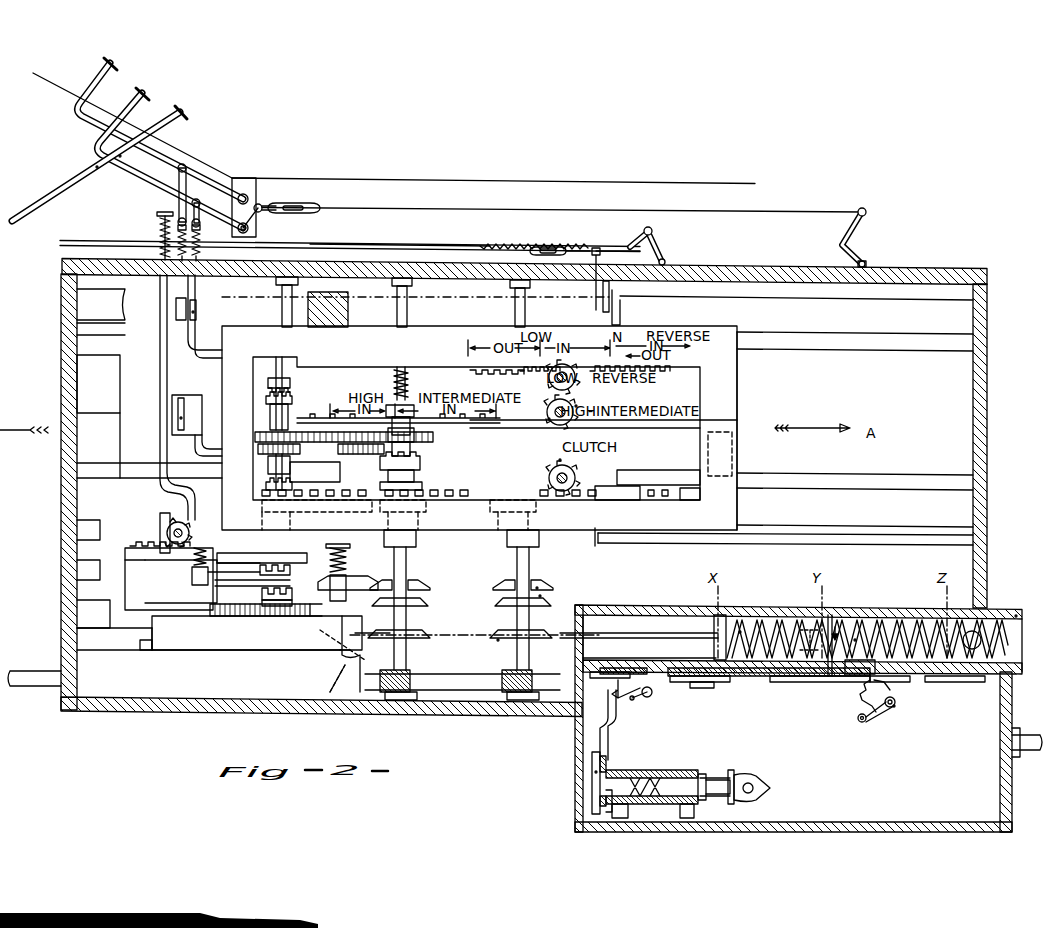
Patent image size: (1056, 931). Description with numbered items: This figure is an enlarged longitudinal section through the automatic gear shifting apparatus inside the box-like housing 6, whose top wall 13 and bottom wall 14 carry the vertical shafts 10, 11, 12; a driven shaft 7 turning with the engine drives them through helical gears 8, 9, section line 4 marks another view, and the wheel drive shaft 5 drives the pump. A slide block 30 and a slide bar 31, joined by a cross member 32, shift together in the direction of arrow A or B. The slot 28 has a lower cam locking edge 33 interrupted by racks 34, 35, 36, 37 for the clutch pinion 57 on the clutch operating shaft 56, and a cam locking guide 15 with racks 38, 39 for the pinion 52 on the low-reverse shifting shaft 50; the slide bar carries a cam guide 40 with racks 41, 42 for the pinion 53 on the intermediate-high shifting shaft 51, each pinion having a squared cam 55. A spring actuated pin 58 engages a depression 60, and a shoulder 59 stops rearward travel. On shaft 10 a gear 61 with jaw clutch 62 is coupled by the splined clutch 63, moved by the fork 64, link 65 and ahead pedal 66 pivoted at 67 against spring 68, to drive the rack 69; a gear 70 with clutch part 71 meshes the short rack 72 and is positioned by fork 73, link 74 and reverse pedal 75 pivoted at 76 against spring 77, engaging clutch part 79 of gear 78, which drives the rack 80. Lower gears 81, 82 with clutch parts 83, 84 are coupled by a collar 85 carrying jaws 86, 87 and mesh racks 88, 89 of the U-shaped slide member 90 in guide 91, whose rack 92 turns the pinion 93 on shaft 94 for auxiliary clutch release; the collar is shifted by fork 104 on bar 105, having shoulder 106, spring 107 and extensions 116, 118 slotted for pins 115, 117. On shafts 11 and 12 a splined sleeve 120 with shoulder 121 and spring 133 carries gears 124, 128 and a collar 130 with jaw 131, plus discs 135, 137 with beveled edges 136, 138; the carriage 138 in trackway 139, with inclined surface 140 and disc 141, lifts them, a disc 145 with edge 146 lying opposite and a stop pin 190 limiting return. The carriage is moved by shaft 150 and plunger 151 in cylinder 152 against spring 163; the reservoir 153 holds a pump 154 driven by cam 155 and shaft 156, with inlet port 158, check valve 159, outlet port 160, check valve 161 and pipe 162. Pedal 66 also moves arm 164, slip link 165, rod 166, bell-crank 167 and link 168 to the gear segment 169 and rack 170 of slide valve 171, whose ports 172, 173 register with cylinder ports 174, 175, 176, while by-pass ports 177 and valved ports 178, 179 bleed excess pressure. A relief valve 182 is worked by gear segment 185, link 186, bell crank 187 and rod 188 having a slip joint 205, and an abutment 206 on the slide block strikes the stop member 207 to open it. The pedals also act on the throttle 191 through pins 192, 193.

The section line 4- 4 is at (405, 228).
The wheel drive shaft 5 is at (0, 268).
The housing 6 is at (62, 500).
The driven shaft 7 is at (30, 671).
The helical gears 8 is at (352, 578).
The helical gears 9 is at (178, 494).
The shaft 10 is at (282, 310).
The shaft 11 is at (397, 312).
The shaft 12 is at (525, 312).
The top wall 13 is at (765, 278).
The bottom wall 14 is at (282, 713).
The cam locking guide 15 is at (700, 358).
The central aperture 28 is at (700, 400).
The slide block 30 is at (730, 380).
The slide bar 31 is at (658, 461).
The cross member 32 is at (734, 455).
The lower edge 33 is at (635, 500).
The gear rack 34 is at (684, 500).
The gear rack 35 is at (590, 497).
The gear rack 36 is at (431, 505).
The clutch rack 37 is at (315, 472).
The gear rack 38 is at (640, 370).
The gear rack 39 is at (506, 370).
The cam guide 40 is at (700, 428).
The gear rack 41 is at (430, 438).
The gear rack 42 is at (330, 424).
The low-reverse shifting shaft 50 is at (550, 380).
The intermediate-high shifting shaft 51 is at (568, 418).
The pinion 52 is at (556, 388).
The pinion 53 is at (576, 406).
The squared cam 55 is at (550, 420).
The clutch operating shaft 56 is at (572, 476).
The clutch pinion 57 is at (560, 460).
The spring actuated pin 58 is at (340, 300).
The shoulder 59 is at (92, 382).
The depression 60 is at (438, 328).
The gear 61 is at (268, 434).
The jaw clutch 62 is at (266, 400).
The complementary jaw clutch 63 is at (268, 383).
The fork 64 is at (205, 352).
The link 65 is at (200, 220).
The ahead pedal 66 is at (96, 144).
The pivot 67 is at (256, 230).
The expansion spring 68 is at (215, 247).
The rack 69 is at (336, 443).
The gear 70 is at (258, 448).
The jaw clutch part 71 is at (268, 478).
The short length rack 72 is at (361, 456).
The fork 73 is at (205, 456).
The link 74 is at (186, 180).
The reverse pedal 75 is at (96, 77).
The pivot 76 is at (250, 192).
The expansion spring 77 is at (176, 238).
The gear 78 is at (260, 494).
The jaw clutch part 79 is at (266, 488).
The gear rack 80 is at (325, 512).
The gear 81 is at (258, 580).
The gear 82 is at (272, 622).
The clutch part 83 is at (290, 572).
The clutch part 84 is at (292, 602).
The collar 85 is at (250, 585).
The jaw clutch part 86 is at (215, 553).
The jaw clutch part 87 is at (262, 596).
The rack 88 is at (295, 558).
The rack 89 is at (255, 616).
The slide member 90 is at (135, 574).
The guide 91 is at (100, 628).
The rack 92 is at (125, 548).
The pinion 93 is at (167, 532).
The pinion shaft 94 is at (170, 530).
The fork 104 is at (192, 575).
The bar 105 is at (160, 372).
The shoulder 106 is at (165, 212).
The expansion spring 107 is at (160, 220).
The pin 115 is at (197, 312).
The extension 116 is at (197, 300).
The pin 117 is at (184, 418).
The extension 118 is at (186, 403).
The sleeve 120 is at (410, 557).
The shoulder 121 is at (406, 404).
The gear 124 is at (412, 450).
The gear 128 is at (536, 512).
The collar 130 is at (425, 486).
The jaw clutch part 131 is at (420, 466).
The expansion spring 133 is at (394, 378).
The circular disc 135 is at (490, 630).
The beveled peripheral edge 136 is at (498, 640).
The disc 137 is at (490, 602).
The carriage 138 is at (233, 633).
The trackway 139 is at (213, 669).
The inclined surface 140 is at (323, 654).
The disc 141 is at (348, 579).
The disc 145 is at (537, 588).
The peripheral edge 146 is at (540, 596).
The shaft 150 is at (668, 632).
The plunger 151 is at (726, 622).
The cylinder 152 is at (1016, 616).
The casing 153 is at (808, 718).
The reciprocating pump 154 is at (680, 770).
The cam 155 is at (752, 780).
The shaft 156 is at (768, 792).
The inlet port 158 is at (602, 812).
The check valve 159 is at (596, 803).
The outlet port 160 is at (606, 760).
The check valve 161 is at (596, 772).
The pipe 162 is at (610, 738).
The expansion spring 163 is at (920, 628).
The arm 164 is at (262, 212).
The slip link 165 is at (306, 204).
The rod 166 is at (432, 186).
The bell-crank 167 is at (852, 233).
The link 168 is at (868, 262).
The gear segment 169 is at (894, 706).
The rack 170 is at (856, 676).
The ported slide valve 171 is at (760, 678).
The ports 172 is at (690, 682).
The ports 173 is at (712, 688).
The port 174 is at (712, 664).
The port 175 is at (830, 680).
The port 176 is at (965, 682).
The by-pass ports 177 is at (980, 634).
The valve closed port 178 is at (740, 632).
The valve closed port 179 is at (855, 640).
The relief valve 182 is at (618, 690).
The gear segment 185 is at (652, 696).
The link 186 is at (650, 250).
The bell crank 187 is at (666, 240).
The rod 188 is at (370, 244).
The stop pin 190 is at (146, 650).
The engine throttle 191 is at (190, 108).
The pin 192 is at (97, 167).
The pin 193 is at (120, 155).
The slip joint connection 205 is at (568, 247).
The abutment 206 is at (622, 320).
The stop member 207 is at (604, 290).